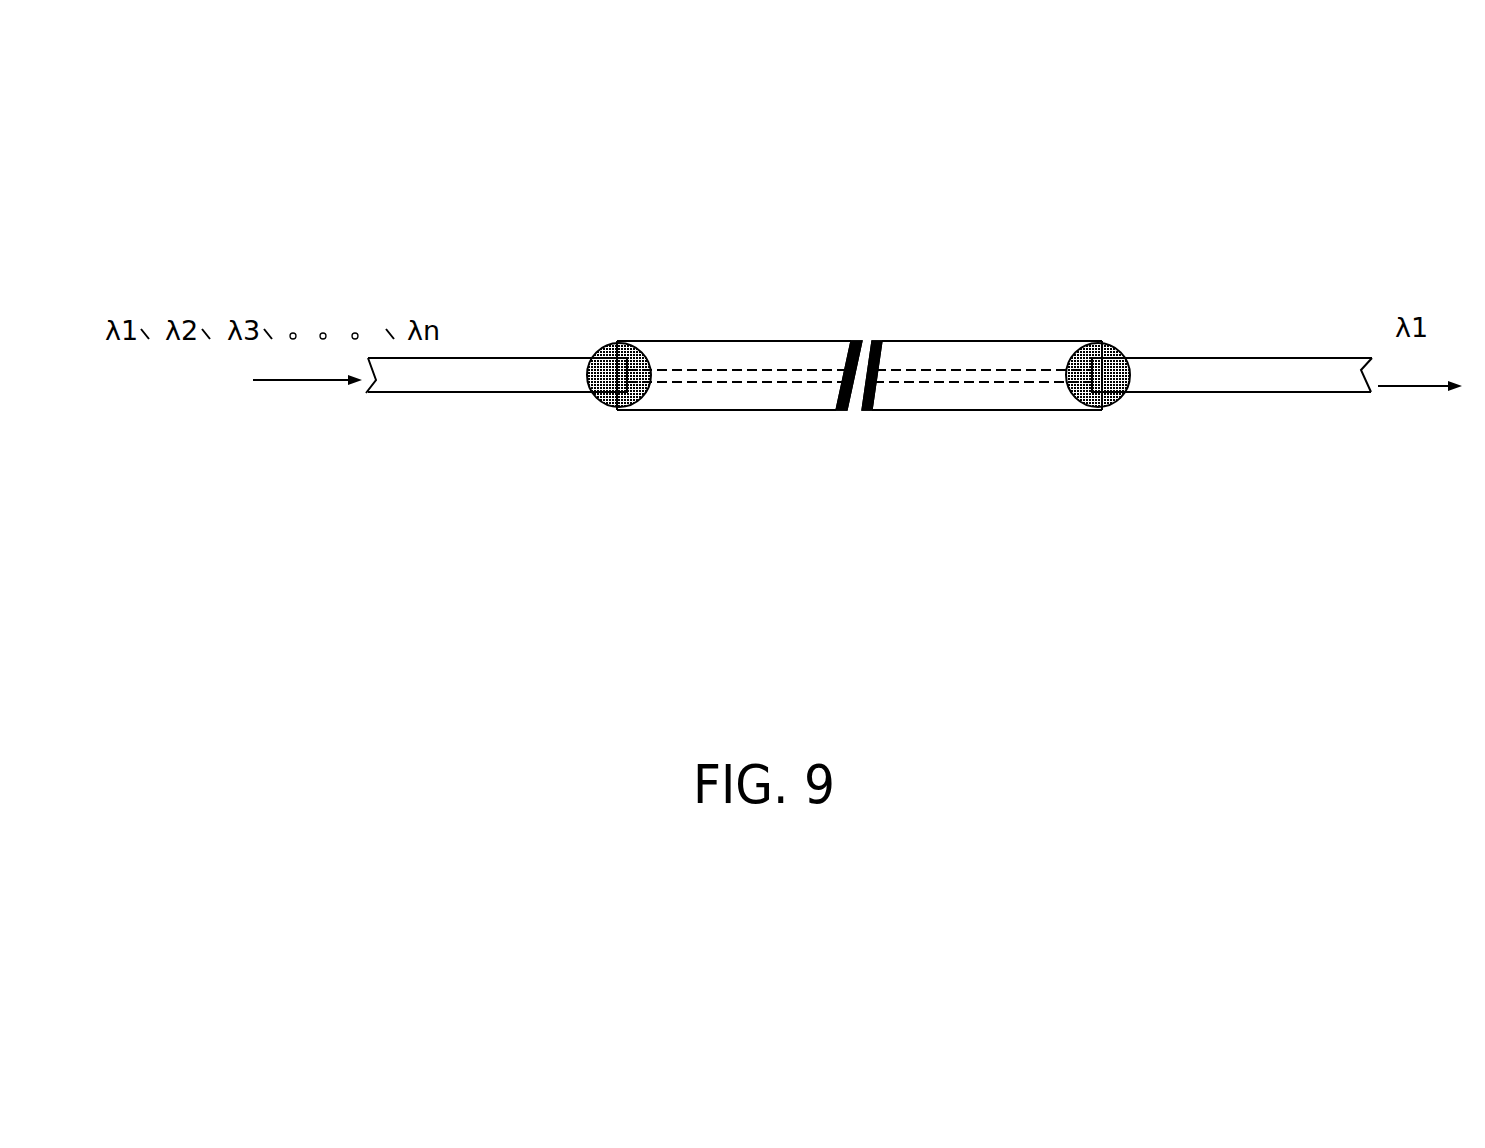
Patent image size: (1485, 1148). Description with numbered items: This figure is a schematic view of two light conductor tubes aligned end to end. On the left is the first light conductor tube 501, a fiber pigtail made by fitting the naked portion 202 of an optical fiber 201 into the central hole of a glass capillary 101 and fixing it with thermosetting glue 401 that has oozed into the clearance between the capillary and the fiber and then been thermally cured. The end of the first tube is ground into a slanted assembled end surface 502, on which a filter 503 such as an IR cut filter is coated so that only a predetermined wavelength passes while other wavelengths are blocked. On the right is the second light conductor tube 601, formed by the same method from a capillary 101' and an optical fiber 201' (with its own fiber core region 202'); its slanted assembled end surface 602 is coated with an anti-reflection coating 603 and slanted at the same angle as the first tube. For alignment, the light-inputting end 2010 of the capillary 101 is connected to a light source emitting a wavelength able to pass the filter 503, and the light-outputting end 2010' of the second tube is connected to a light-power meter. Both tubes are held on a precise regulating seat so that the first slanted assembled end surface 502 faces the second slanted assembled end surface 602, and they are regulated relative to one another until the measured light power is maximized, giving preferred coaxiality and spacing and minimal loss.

The optical fiber 201 is at (492, 433).
The light-inputting end 2010 is at (493, 433).
The optical fiber 201' is at (1232, 433).
The light-outputting end 2010' is at (1232, 433).
The thermosetting glue 401 is at (603, 405).
The capillary 101 is at (734, 434).
The capillary 101' is at (987, 434).
The naked portion 202 is at (737, 466).
The second optical waveguide 202' is at (983, 466).
The first light conductor tube 501 is at (728, 328).
The slanted assembled end surface 502 is at (847, 412).
The filter 503 is at (870, 343).
The second light conductor tube 601 is at (1022, 328).
The slanted assembled end surface 602 is at (858, 412).
The anti-reflection coating 603 is at (875, 343).